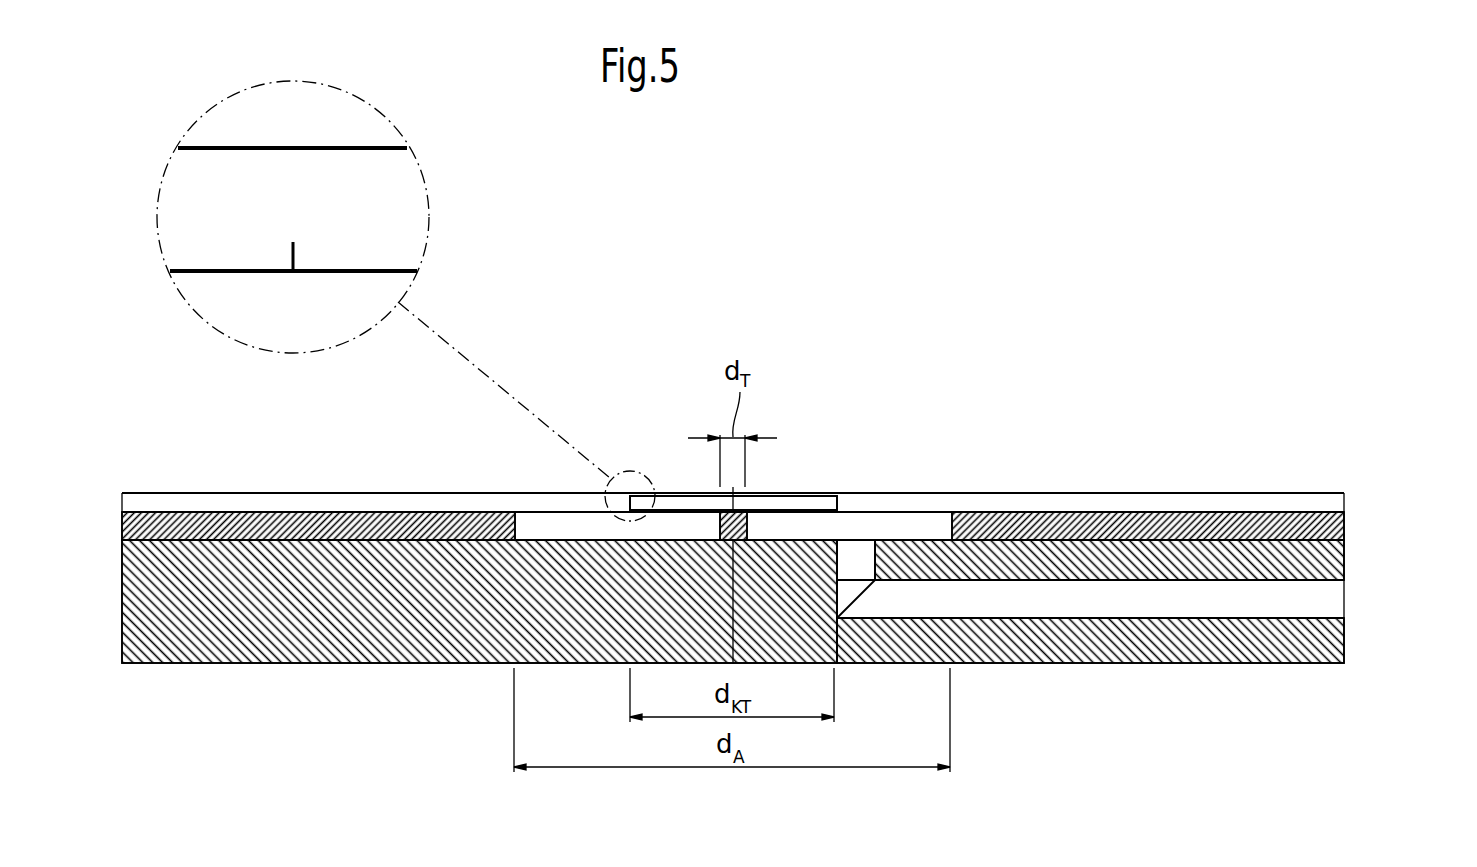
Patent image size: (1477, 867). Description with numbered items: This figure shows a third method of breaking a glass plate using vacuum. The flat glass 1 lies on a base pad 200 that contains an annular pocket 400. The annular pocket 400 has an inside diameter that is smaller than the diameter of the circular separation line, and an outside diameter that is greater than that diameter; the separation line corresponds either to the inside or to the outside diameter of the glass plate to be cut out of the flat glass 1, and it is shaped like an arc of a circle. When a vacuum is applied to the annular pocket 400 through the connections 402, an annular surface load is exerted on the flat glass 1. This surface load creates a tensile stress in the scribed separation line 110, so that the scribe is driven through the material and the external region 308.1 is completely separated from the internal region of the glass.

The flat glass 1 is at (1160, 493).
The separation line 110 is at (300, 253).
The base pad 200 is at (1305, 512).
The external region 308.1 is at (1070, 500).
The annular pocket 400 is at (917, 512).
The connections 402 is at (1330, 602).